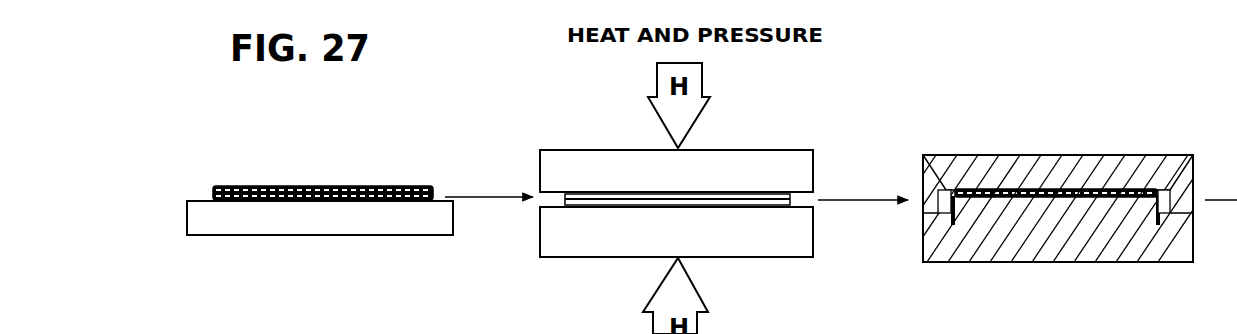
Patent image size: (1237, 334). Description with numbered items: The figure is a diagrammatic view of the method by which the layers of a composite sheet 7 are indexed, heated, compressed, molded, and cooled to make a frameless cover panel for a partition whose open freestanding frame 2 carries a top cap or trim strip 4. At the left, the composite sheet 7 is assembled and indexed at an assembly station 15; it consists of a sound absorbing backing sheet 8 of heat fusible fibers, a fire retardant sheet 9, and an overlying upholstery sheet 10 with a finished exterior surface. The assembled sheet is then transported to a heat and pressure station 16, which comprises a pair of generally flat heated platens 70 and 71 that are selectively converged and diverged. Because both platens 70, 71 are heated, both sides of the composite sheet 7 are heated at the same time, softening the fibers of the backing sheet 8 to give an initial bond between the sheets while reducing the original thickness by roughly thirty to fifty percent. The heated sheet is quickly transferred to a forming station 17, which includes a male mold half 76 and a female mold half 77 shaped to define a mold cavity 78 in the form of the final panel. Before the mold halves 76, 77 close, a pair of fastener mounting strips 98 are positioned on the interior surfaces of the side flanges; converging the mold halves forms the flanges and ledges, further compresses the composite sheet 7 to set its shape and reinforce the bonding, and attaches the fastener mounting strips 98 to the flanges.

The frame 2 is at (214, 333).
The top cap or trim strip 4 is at (951, 333).
The composite sheet 7 is at (426, 184).
The backing sheet 8 is at (214, 197).
The fire retardant sheet 9 is at (214, 192).
The upholstery sheet 10 is at (220, 186).
The assembly station 15 is at (285, 236).
The heat and pressure station 16 is at (590, 258).
The forming station 17 is at (1006, 262).
The heated platen 70 is at (752, 158).
The heated platen 71 is at (738, 248).
The male mold half 76 is at (1070, 250).
The female mold half 77 is at (978, 163).
The mold cavity 78 is at (1098, 193).
The fastener mounting strip 98 is at (933, 262).